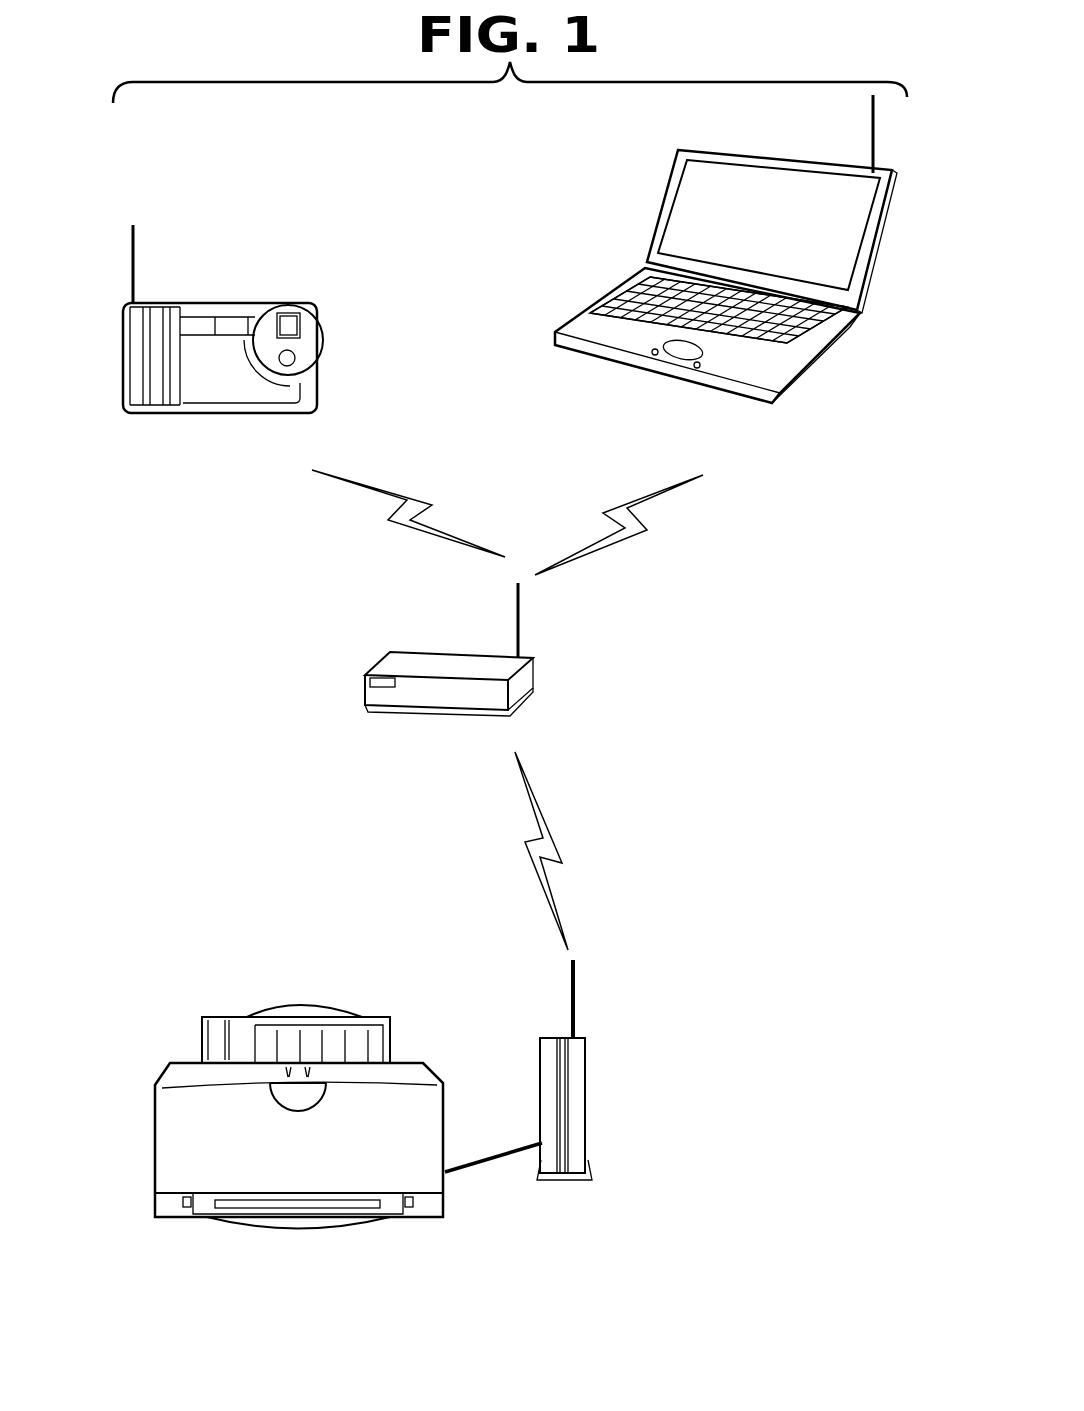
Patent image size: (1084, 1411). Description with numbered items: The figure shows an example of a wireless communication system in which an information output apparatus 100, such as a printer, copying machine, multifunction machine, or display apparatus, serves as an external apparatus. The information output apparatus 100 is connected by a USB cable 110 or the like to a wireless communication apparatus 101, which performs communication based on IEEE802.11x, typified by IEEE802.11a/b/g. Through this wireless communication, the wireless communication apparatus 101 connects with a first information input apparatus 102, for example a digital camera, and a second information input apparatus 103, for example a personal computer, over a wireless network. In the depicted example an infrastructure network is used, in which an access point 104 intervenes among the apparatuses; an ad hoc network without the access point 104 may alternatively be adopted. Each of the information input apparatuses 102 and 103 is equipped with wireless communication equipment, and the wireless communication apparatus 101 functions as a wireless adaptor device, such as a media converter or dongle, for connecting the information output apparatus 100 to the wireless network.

The information output apparatus 100 is at (370, 1017).
The wireless communication apparatus 101 is at (585, 1052).
The first information input apparatus 102 is at (258, 302).
The second information input apparatus 103 is at (742, 152).
The access point 104 is at (436, 652).
The cable 110 is at (490, 1153).